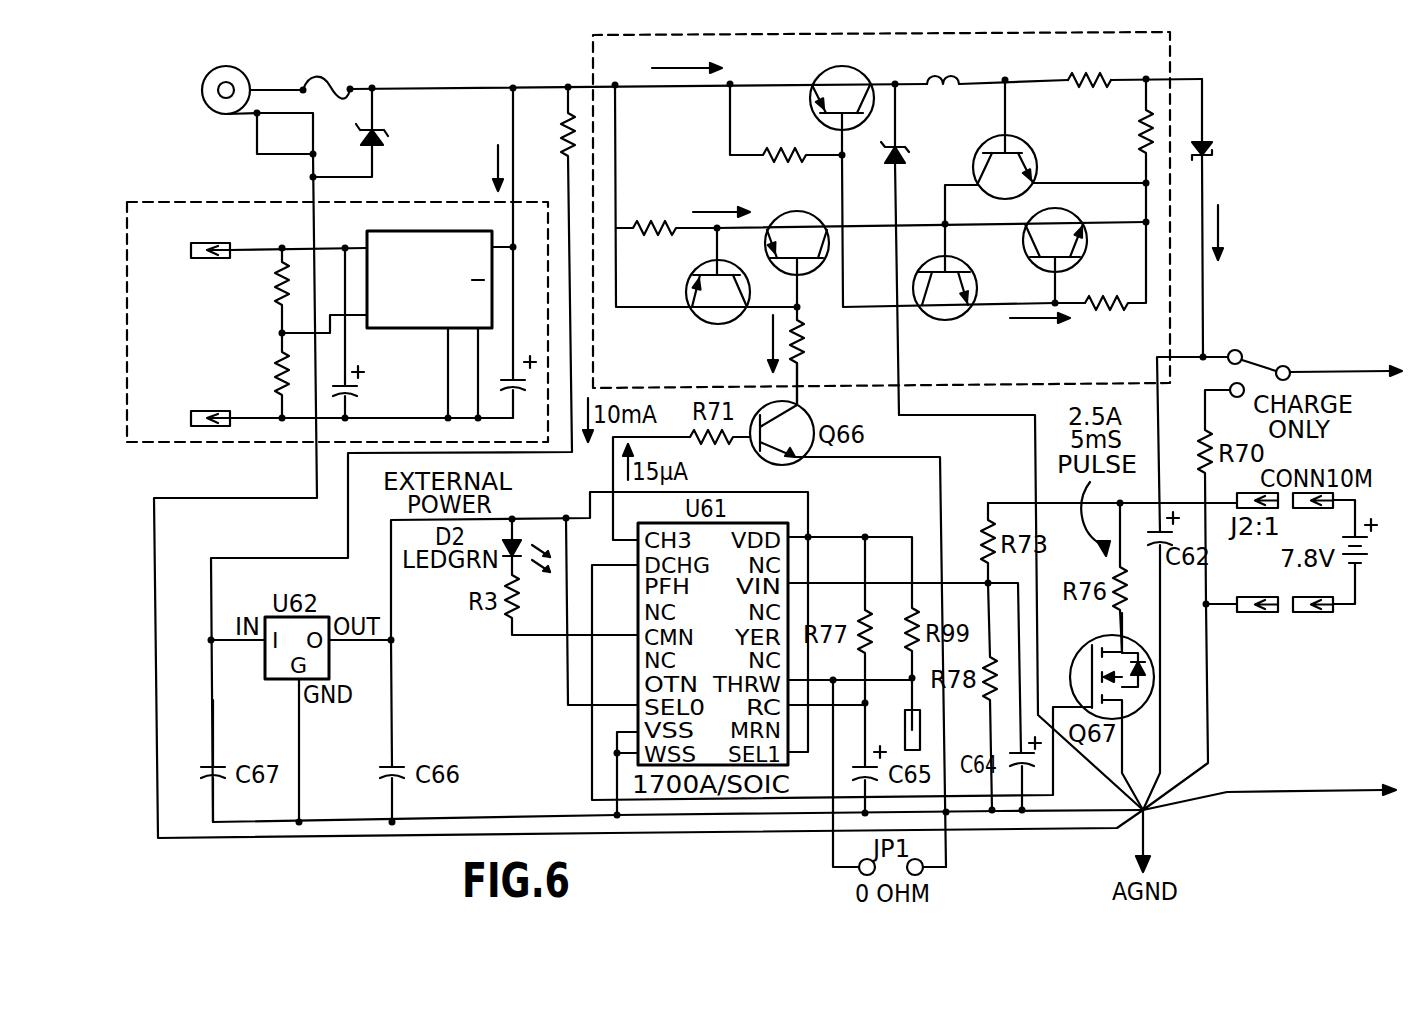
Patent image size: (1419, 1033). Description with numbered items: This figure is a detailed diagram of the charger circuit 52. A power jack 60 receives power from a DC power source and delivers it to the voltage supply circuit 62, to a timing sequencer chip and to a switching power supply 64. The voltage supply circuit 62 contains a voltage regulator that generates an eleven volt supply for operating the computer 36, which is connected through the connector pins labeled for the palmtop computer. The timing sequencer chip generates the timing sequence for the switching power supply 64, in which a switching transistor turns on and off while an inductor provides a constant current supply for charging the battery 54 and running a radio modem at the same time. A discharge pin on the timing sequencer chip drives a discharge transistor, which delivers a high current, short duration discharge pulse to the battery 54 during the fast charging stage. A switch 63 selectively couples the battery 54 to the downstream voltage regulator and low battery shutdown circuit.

The power jack 60 is at (204, 90).
The voltage supply circuit 62 is at (341, 253).
The switching power supply 64 is at (593, 40).
The charger circuit 52 is at (1237, 54).
The switch 63 is at (1267, 363).
The battery 54 is at (1362, 570).
The computer 36 is at (206, 334).